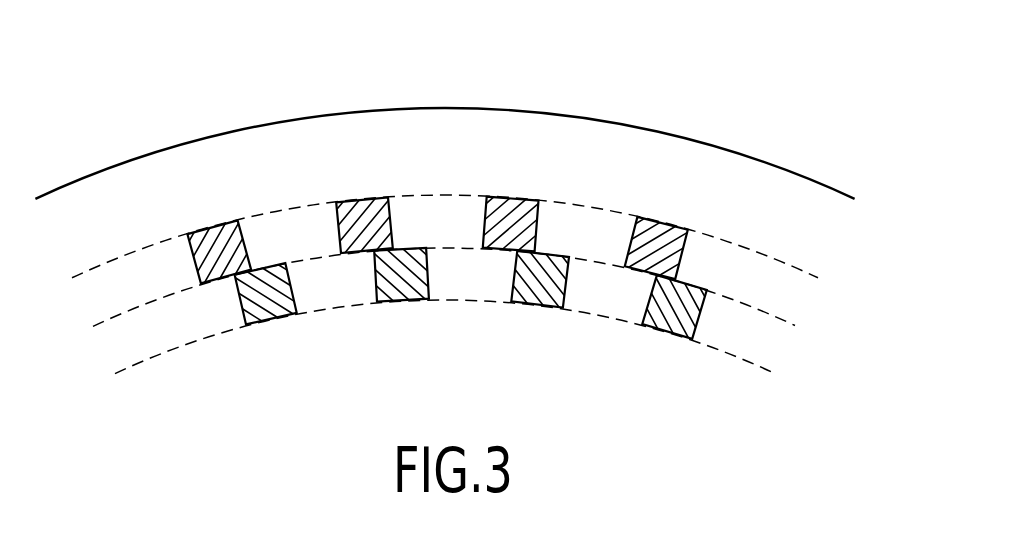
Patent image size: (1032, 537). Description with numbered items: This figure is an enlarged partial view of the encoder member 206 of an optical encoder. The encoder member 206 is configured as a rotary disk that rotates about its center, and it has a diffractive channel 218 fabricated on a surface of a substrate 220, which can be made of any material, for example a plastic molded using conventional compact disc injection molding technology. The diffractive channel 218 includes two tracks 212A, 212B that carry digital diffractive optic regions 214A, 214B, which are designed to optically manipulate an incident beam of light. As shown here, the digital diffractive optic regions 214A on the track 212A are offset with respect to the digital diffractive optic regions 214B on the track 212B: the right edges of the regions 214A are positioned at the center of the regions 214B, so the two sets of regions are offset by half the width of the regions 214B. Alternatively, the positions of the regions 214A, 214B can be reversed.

The encoder member 206 is at (719, 71).
The track 212A is at (792, 298).
The track 212B is at (780, 352).
The digital diffractive optic regions 214A is at (213, 223).
The digital diffractive optic regions 214B is at (273, 320).
The diffractive channel 218 is at (365, 169).
The substrate 220 is at (507, 108).